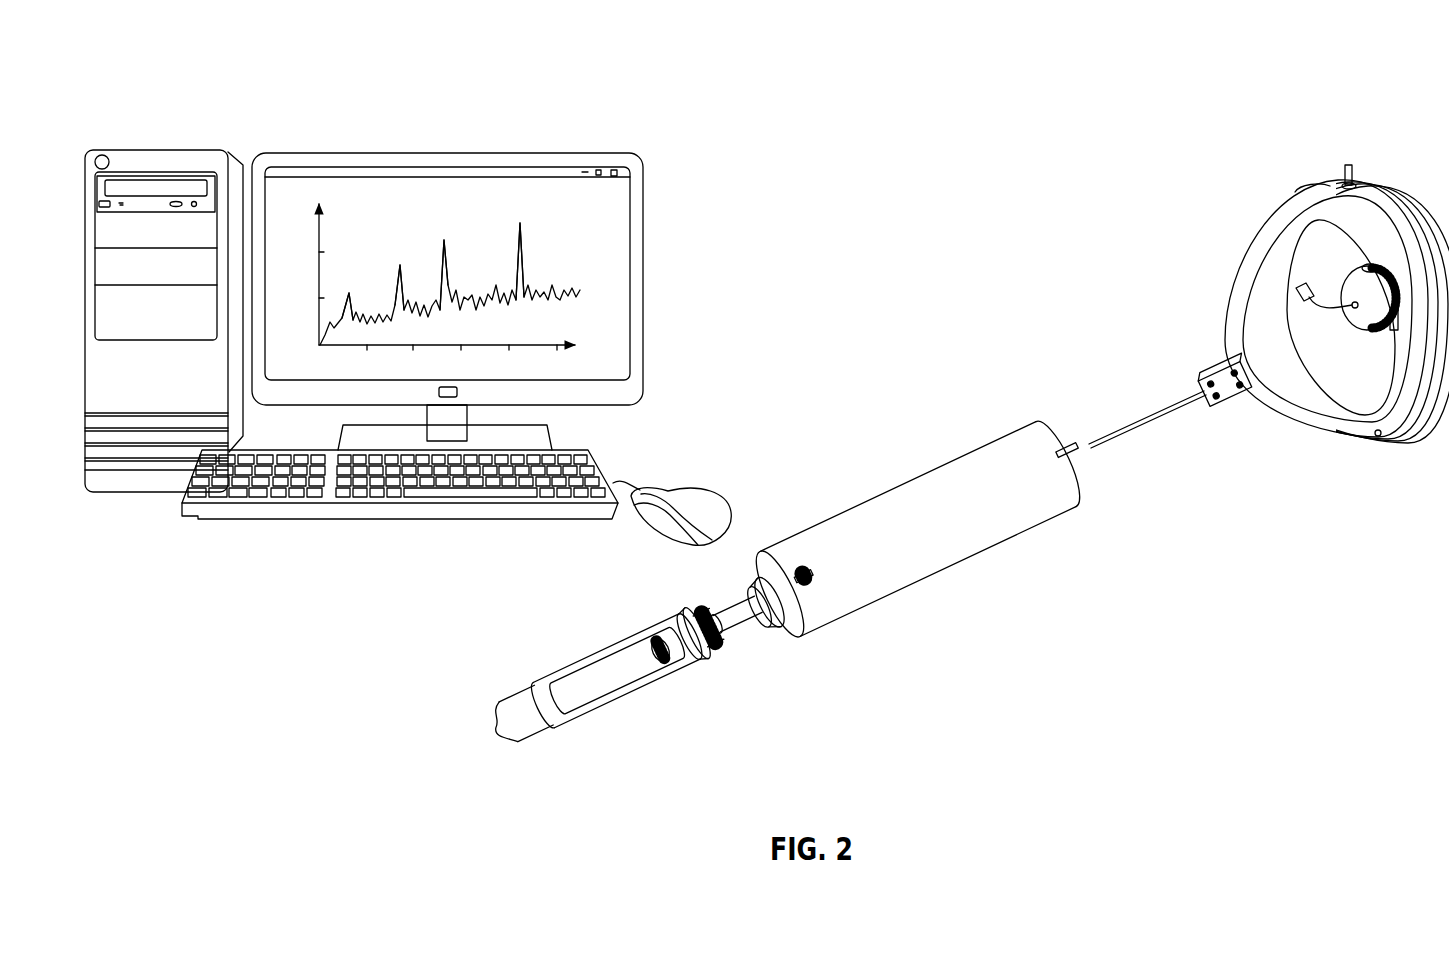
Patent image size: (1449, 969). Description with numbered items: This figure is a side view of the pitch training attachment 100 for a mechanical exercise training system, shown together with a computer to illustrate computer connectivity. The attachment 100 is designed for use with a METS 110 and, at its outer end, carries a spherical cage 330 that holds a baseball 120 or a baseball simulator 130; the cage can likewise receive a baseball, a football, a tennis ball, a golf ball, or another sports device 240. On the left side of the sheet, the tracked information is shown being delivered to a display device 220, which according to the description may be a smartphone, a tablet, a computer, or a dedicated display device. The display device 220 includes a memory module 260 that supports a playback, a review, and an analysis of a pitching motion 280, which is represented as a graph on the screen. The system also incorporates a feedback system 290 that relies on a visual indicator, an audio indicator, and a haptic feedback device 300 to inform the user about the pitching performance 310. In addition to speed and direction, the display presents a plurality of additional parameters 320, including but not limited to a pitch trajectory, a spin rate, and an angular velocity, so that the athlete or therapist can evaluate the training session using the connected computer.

The pitch training attachment 100 is at (922, 286).
The METS 110 is at (1322, 293).
The baseball 120 is at (1390, 322).
The baseball simulator 130 is at (1311, 396).
The sports device 240 is at (1312, 416).
The spherical cage 330 is at (1263, 232).
The display device 220 is at (279, 69).
The memory module 260 is at (633, 228).
The playback, review, and analysis of a pitching motion 280 is at (516, 219).
The feedback system 290 is at (349, 293).
The visual, audio, and haptic indicator 300 is at (400, 265).
The pitching performance 310 is at (444, 240).
The additional parameters 320 is at (520, 250).